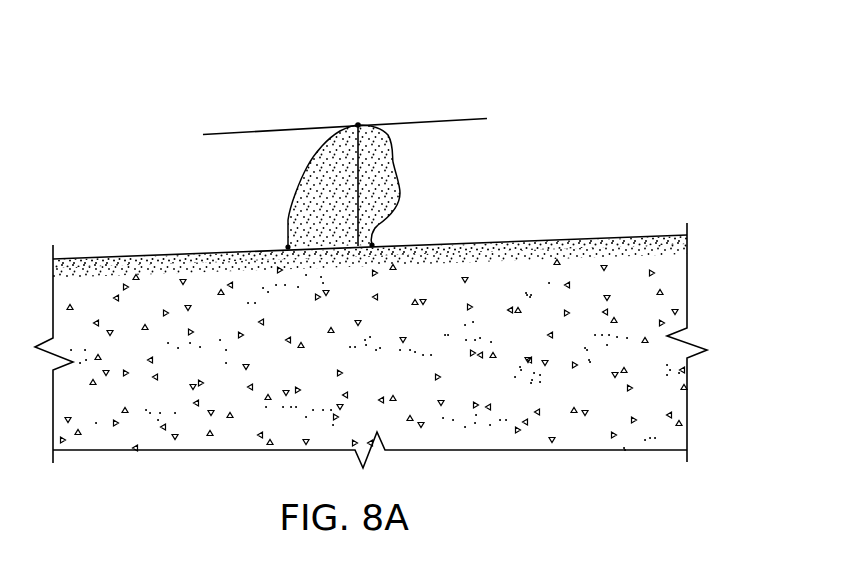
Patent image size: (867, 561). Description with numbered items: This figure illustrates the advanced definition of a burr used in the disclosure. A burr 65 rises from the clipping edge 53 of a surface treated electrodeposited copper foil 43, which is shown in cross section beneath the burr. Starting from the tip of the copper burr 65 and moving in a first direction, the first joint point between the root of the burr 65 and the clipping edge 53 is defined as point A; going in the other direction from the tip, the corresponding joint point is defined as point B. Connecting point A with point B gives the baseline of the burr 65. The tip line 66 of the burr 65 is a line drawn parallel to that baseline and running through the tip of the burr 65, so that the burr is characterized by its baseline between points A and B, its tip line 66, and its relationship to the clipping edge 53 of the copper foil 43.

The tip line 66 is at (358, 122).
The burr 65 is at (395, 171).
The clipping edge 53 is at (667, 243).
The surface treated electrodeposited copper foil 43 is at (657, 405).